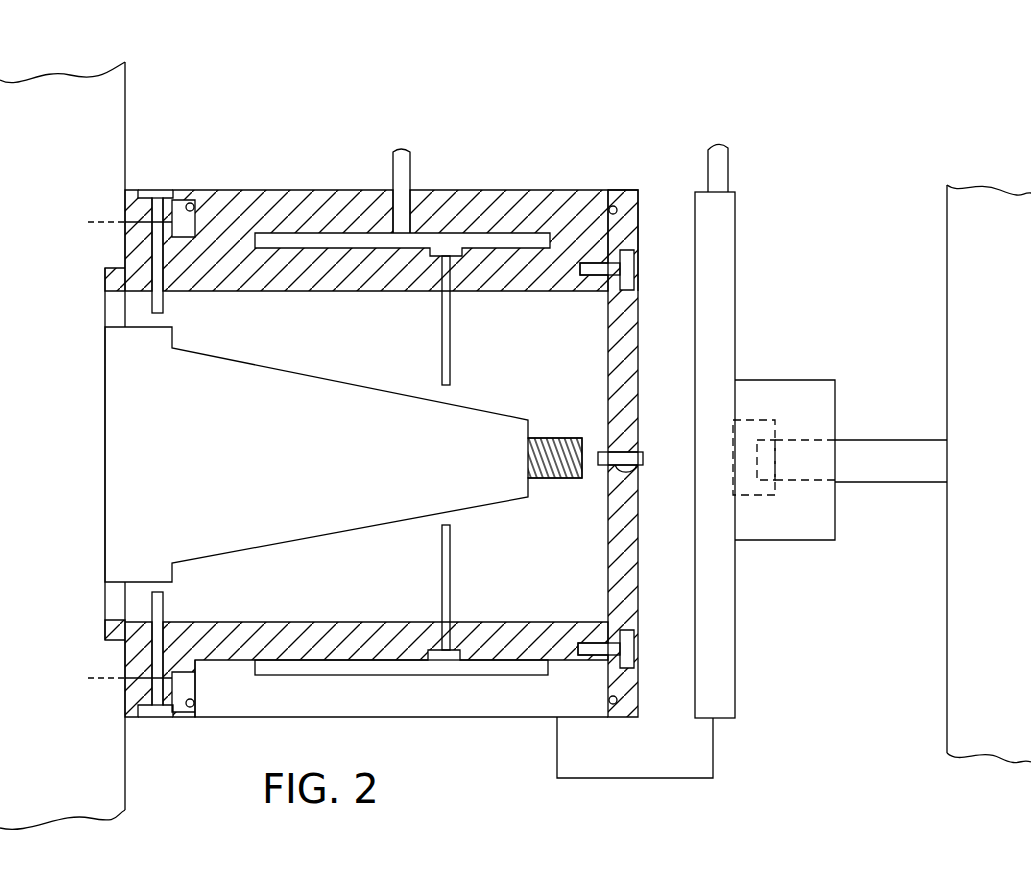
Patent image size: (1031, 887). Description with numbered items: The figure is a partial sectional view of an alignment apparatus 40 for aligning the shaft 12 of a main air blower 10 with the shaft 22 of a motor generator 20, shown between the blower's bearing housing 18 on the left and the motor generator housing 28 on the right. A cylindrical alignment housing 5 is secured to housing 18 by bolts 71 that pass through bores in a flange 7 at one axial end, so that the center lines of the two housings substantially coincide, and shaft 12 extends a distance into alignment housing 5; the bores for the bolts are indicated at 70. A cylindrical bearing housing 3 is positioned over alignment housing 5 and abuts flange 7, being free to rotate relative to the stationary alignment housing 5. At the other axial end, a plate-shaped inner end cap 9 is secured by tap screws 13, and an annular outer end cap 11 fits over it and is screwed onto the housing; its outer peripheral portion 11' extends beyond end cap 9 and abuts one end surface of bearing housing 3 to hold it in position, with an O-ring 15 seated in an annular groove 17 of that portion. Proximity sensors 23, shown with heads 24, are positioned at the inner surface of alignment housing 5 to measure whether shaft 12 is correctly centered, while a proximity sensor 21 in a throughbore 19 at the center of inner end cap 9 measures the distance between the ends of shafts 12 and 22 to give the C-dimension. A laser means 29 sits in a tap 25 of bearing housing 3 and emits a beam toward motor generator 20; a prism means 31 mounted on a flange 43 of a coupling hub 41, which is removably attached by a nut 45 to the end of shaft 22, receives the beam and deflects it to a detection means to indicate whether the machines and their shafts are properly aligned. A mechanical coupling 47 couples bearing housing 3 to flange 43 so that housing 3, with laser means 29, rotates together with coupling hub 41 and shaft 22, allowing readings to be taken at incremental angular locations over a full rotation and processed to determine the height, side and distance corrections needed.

The main air blower 10 is at (127, 97).
The bearing housing of main air blower 18 is at (103, 133).
The flange 7 is at (130, 197).
The bolts 71 is at (180, 217).
The bore 70 is at (175, 262).
The proximity sensors 23 is at (165, 297).
The bolt head 24 is at (448, 268).
The tap 25 is at (367, 190).
The laser means 29 is at (411, 168).
The alignment apparatus 40 is at (484, 166).
The bearing housing 3 is at (518, 202).
The alignment housing 5 is at (290, 283).
The inner end cap 9 is at (632, 370).
The outer end cap 11 is at (644, 424).
The outer peripheral portion 11' is at (663, 193).
The tap screws 13 is at (618, 272).
The O-ring 15 is at (605, 207).
The annular groove 17 is at (612, 200).
The proximity sensor 21 is at (622, 457).
The throughbore 19 is at (632, 472).
The shaft of main air blower 12 is at (355, 533).
The flange of coupling hub 43 is at (738, 240).
The prism means 31 is at (729, 158).
The coupling hub 41 is at (745, 540).
The nut 45 is at (752, 487).
The shaft of motor generator 22 is at (878, 480).
The motor generator 20 is at (947, 205).
The housing of motor generator 28 is at (960, 247).
The mechanical coupling 47 is at (660, 778).